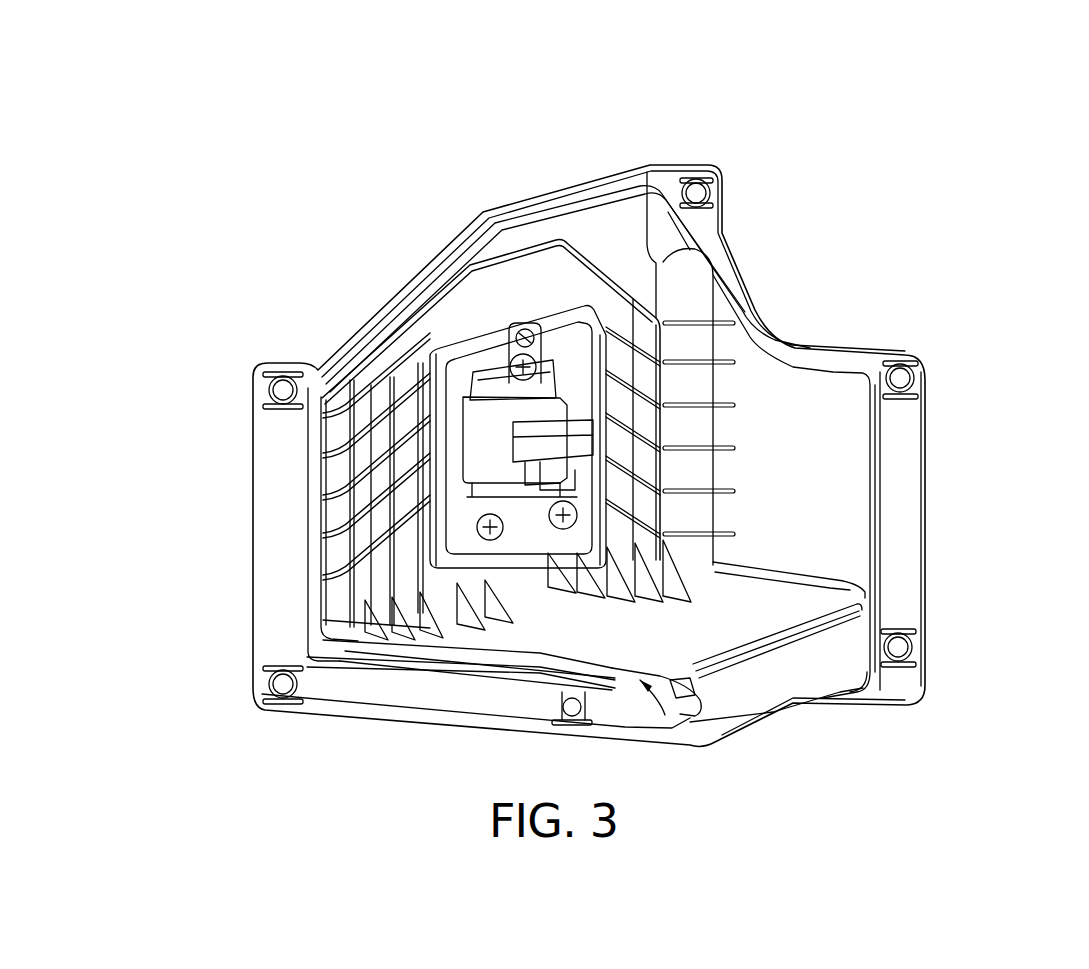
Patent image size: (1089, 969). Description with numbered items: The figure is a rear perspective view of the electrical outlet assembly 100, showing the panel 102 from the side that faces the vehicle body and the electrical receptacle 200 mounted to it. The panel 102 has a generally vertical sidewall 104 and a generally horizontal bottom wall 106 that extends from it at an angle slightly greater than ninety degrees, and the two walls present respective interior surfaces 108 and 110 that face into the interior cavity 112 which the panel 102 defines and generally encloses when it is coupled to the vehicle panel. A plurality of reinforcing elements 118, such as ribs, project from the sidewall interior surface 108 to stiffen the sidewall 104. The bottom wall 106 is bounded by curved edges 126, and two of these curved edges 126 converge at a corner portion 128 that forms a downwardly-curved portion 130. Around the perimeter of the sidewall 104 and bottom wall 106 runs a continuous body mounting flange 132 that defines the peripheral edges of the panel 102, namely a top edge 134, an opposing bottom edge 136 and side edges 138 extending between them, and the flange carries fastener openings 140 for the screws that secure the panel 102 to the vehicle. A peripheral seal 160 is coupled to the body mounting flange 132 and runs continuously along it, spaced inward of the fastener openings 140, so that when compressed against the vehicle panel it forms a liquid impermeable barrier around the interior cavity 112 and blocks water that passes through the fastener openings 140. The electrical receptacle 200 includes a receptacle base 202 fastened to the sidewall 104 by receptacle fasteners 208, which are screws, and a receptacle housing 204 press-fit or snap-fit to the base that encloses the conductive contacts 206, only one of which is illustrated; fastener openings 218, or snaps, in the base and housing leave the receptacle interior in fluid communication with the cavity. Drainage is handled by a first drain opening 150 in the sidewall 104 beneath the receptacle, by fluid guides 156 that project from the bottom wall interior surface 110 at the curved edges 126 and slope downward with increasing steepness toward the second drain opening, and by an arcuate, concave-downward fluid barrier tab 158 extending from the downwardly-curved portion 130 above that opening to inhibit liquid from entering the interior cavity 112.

The electrical outlet assembly 100 is at (325, 160).
The panel 102 is at (792, 308).
The sidewall 104 is at (597, 218).
The bottom wall 106 is at (773, 618).
The interior surface 108 is at (340, 498).
The interior surface 110 is at (820, 584).
The interior cavity 112 is at (825, 510).
The reinforcing elements 118 is at (340, 533).
The curved edges 126 is at (533, 605).
The corner portion 128 is at (673, 663).
The downwardly-curved portion 130 is at (672, 688).
The body mounting flange 132 is at (328, 700).
The top edge 134 is at (699, 182).
The bottom edge 136 is at (903, 710).
The side edges 138 is at (253, 447).
The fastener openings 140 is at (917, 378).
The first drain opening 150 is at (540, 607).
The fluid guides 156 is at (320, 640).
The fluid barrier tab 158 is at (703, 714).
The peripheral seal 160 is at (887, 478).
The electrical receptacle 200 is at (453, 437).
The receptacle base 202 is at (430, 430).
The receptacle housing 204 is at (537, 410).
The conductive contacts 206 is at (568, 448).
The receptacle fasteners 208 is at (565, 420).
The fastener openings 218 is at (398, 375).